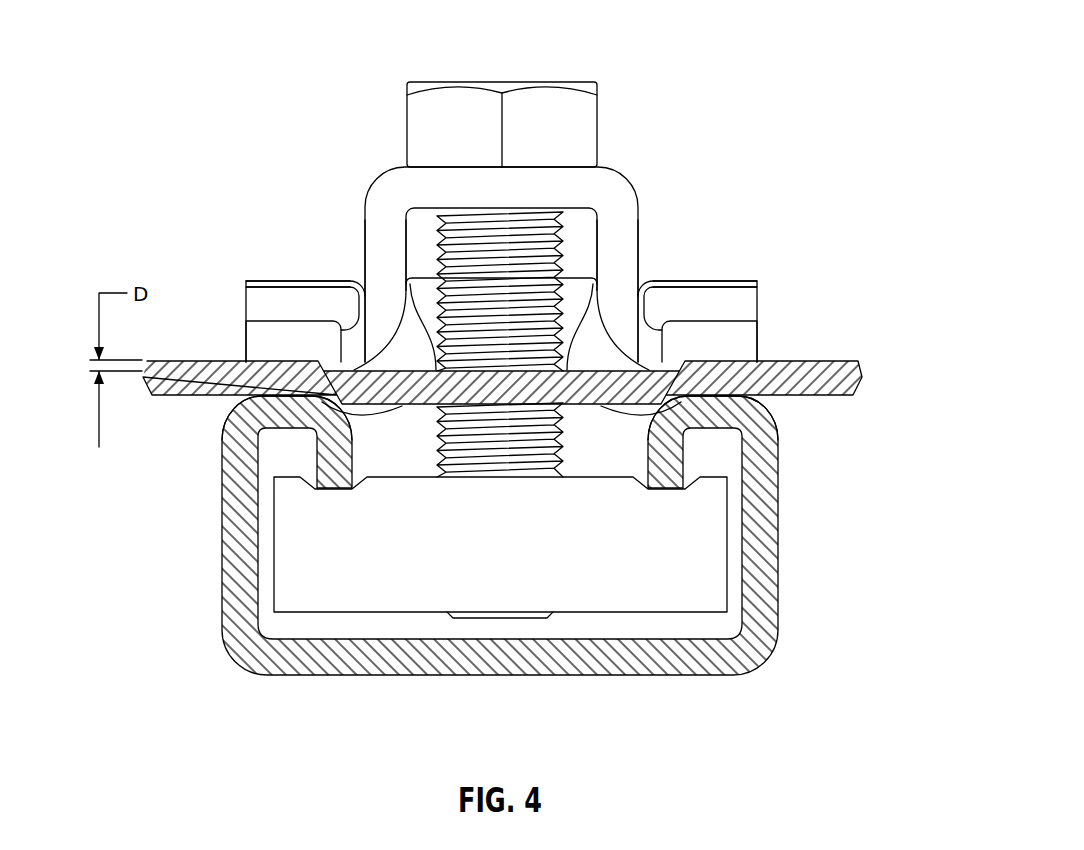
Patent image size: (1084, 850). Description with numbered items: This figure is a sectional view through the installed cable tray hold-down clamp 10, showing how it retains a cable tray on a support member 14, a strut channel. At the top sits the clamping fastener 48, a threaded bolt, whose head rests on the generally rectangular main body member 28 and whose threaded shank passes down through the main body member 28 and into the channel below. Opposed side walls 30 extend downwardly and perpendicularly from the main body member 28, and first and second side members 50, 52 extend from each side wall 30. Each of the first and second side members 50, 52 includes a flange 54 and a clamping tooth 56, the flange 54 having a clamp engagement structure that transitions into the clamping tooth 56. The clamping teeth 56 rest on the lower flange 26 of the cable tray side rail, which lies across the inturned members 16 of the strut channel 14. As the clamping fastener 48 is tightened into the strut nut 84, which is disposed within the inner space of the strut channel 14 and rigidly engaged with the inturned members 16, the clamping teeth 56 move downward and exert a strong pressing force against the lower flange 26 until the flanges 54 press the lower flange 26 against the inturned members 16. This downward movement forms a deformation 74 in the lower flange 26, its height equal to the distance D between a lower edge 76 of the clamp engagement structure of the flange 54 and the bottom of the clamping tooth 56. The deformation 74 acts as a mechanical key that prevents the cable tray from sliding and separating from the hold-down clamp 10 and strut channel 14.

The cable tray hold-down clamp 10 is at (630, 158).
The support member 14 is at (765, 583).
The inturned members 16 is at (327, 390).
The lower flange 26 is at (823, 364).
The main body member 28 is at (417, 182).
The side walls 30 is at (374, 232).
The clamping fastener 48 is at (540, 112).
The first side member 50 is at (735, 266).
The second side member 52 is at (271, 266).
The flange 54 is at (263, 303).
The clamping tooth 56 is at (328, 389).
The deformation 74 is at (275, 415).
The lower edge 76 is at (273, 357).
The strut nut 84 is at (602, 600).